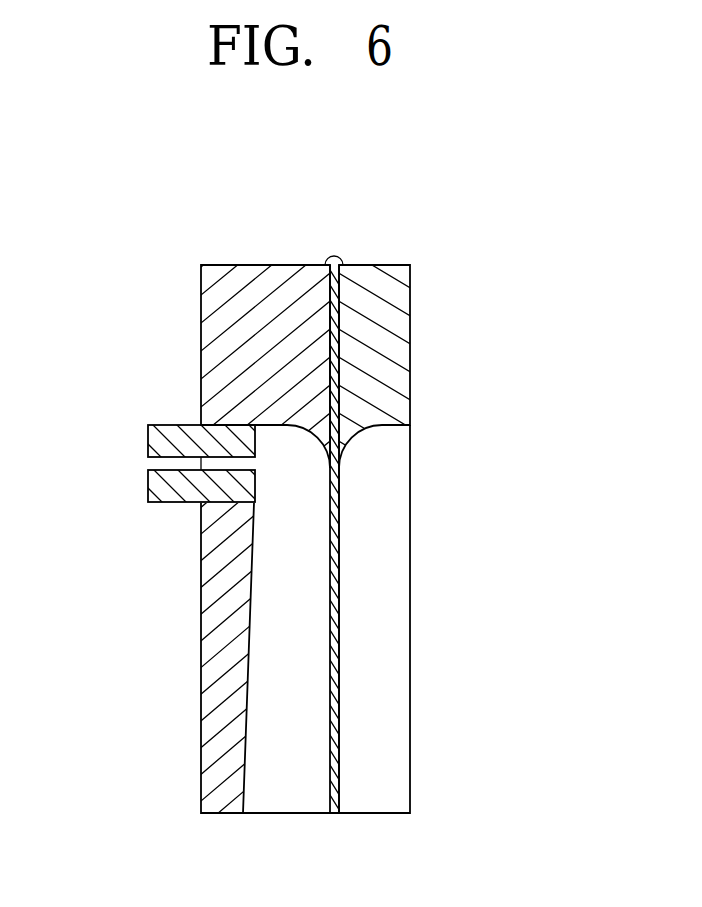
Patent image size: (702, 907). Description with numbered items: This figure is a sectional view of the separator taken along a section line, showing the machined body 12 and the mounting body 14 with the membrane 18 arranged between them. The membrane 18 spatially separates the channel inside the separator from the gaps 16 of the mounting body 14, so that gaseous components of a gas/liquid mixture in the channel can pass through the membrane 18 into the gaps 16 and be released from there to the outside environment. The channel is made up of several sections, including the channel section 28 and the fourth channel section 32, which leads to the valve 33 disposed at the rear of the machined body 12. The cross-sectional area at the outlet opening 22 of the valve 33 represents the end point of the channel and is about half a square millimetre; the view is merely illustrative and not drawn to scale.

The machined body 12 is at (252, 288).
The mounting body 14 is at (397, 332).
The gaps 16 is at (397, 588).
The membrane 18 is at (331, 740).
The outlet opening 22 is at (137, 462).
The channel section 28 is at (335, 254).
The fourth channel section 32 is at (285, 697).
The valve 33 is at (158, 425).